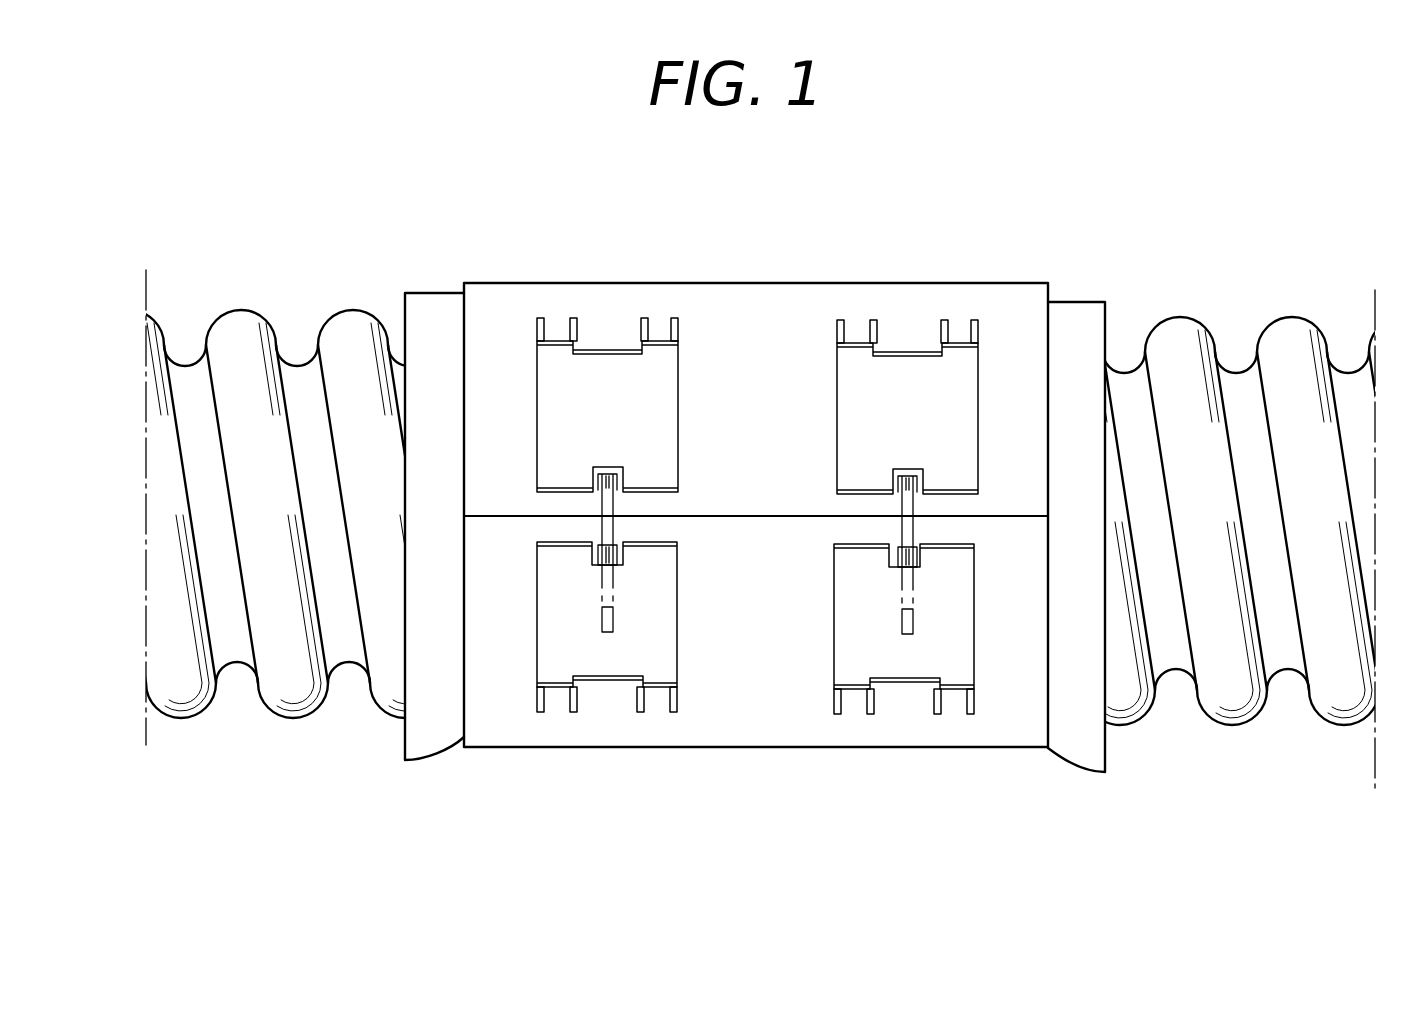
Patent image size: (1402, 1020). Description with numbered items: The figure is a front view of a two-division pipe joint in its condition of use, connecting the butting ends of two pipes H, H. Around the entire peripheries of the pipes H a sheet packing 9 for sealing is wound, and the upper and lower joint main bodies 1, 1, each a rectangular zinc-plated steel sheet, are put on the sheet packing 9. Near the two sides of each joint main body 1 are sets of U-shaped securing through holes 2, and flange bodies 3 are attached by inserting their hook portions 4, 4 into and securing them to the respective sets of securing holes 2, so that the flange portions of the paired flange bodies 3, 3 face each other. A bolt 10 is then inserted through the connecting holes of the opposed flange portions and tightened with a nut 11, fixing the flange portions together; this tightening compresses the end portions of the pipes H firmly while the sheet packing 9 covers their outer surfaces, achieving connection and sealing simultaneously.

The joint main body 1 is at (800, 298).
The securing through holes 2 is at (577, 332).
The flange body 3 is at (553, 392).
The hook portions 4 is at (552, 685).
The sheet packing 9 is at (436, 310).
The bolt 10 is at (615, 500).
The nut 11 is at (617, 556).
The pipes H is at (294, 286).